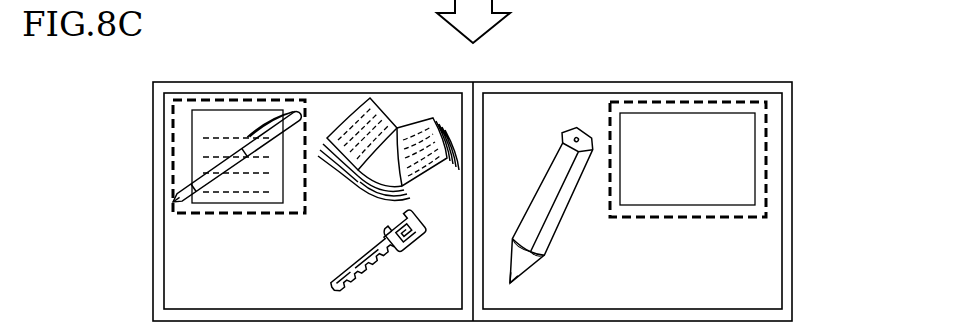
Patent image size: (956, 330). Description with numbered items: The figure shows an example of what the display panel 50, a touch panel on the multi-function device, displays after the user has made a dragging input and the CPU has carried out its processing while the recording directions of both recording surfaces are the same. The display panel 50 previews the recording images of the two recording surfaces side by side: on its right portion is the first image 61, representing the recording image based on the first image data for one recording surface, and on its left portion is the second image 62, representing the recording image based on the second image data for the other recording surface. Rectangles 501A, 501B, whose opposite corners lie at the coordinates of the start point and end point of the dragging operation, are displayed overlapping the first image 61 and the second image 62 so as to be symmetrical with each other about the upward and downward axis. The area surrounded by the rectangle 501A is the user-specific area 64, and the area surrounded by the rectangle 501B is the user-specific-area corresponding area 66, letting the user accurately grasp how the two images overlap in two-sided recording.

The display panel 50 is at (742, 75).
The first image 61 is at (508, 105).
The second image 62 is at (326, 104).
The user-specific area 64 is at (738, 157).
The user-specific-area corresponding area 66 is at (190, 156).
The rectangle 501A is at (667, 100).
The rectangle 501B is at (178, 100).